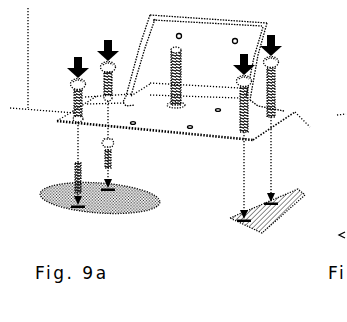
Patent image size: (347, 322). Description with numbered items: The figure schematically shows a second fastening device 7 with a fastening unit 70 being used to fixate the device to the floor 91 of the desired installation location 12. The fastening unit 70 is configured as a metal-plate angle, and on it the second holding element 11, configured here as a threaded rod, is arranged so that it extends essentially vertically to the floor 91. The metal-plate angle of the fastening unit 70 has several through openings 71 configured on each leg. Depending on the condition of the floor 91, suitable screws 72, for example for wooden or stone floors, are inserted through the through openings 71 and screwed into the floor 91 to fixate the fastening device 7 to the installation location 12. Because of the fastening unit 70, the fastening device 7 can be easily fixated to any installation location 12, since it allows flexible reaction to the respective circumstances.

The second fastening device 7 is at (43, 133).
The second holding element 11 is at (174, 80).
The installation location 12 is at (207, 164).
The fastening unit 70 is at (215, 57).
The through openings 71 is at (110, 98).
The screws 72 is at (246, 98).
The floor 91 is at (230, 220).